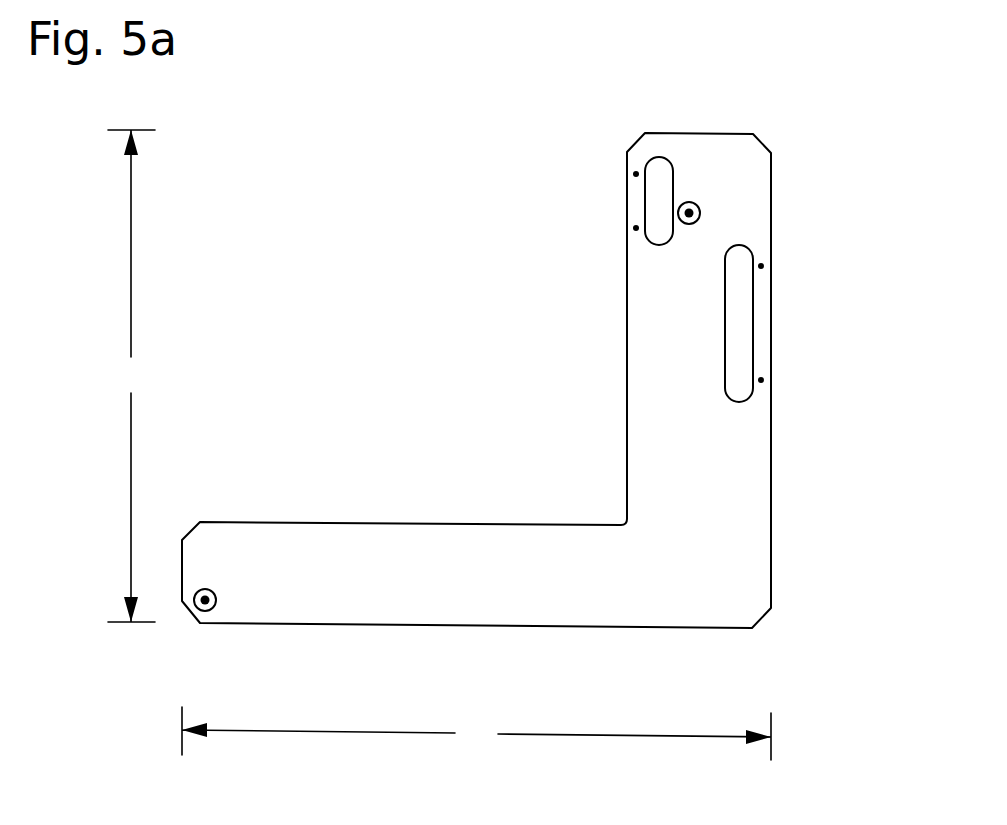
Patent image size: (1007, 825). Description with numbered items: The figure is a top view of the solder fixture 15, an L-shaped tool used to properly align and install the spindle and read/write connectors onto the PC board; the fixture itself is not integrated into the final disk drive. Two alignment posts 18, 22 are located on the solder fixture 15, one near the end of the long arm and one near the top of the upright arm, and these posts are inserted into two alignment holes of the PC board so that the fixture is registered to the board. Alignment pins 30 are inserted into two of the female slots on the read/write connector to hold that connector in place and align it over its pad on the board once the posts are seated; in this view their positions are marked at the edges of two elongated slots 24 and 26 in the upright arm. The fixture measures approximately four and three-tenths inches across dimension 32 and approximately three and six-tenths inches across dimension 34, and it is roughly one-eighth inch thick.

The solder fixture 15 is at (475, 515).
The alignment post 18 is at (193, 615).
The alignment post 22 is at (700, 208).
The elongated slot 24 is at (660, 173).
The elongated slot 26 is at (737, 383).
The alignment pins 30 is at (636, 174).
The dimension 32 is at (476, 733).
The dimension 34 is at (131, 376).